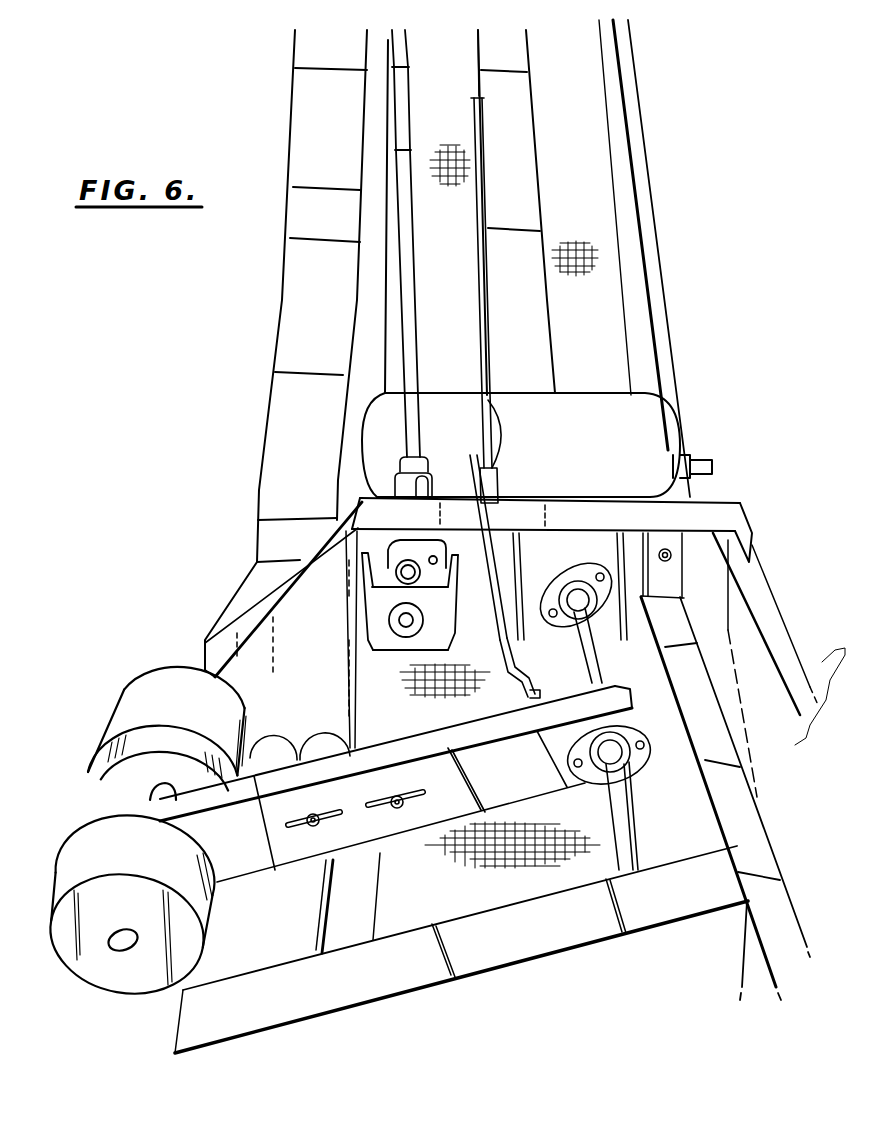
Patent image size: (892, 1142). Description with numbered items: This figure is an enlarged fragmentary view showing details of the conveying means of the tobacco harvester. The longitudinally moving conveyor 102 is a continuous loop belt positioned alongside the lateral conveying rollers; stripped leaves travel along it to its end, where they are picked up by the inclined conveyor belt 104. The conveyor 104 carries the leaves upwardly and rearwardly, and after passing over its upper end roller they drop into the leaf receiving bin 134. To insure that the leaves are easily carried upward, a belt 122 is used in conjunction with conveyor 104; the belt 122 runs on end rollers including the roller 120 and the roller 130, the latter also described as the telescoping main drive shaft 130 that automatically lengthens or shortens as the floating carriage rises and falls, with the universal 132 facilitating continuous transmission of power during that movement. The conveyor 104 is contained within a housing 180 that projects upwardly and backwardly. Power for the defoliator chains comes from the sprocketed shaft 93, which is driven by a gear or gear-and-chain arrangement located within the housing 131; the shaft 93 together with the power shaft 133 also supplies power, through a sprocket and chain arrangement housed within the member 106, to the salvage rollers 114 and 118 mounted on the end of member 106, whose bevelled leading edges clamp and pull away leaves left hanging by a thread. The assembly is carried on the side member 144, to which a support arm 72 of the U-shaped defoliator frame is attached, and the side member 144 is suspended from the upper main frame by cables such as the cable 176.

The support arm 72 is at (677, 897).
The sprocketed shaft 93 is at (622, 832).
The longitudinally moving conveyor 102 is at (556, 866).
The inclined conveyor belt 104 is at (585, 222).
The member 106 is at (385, 787).
The salvage roller 114 is at (151, 957).
The salvage roller 118 is at (151, 705).
The end roller 120 is at (617, 425).
The belt 122 is at (510, 185).
The main drive shaft 130 is at (412, 333).
The housing 131 is at (705, 516).
The universal 132 is at (427, 421).
The power shaft 133 is at (591, 645).
The leaf receiving bin 134 is at (387, 572).
The side member 144 is at (793, 667).
The cable 176 is at (481, 270).
The housing 180 is at (652, 288).